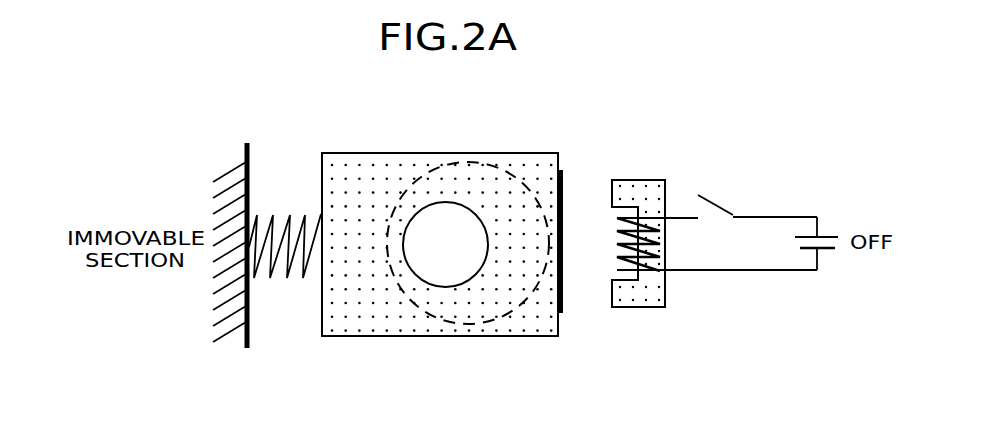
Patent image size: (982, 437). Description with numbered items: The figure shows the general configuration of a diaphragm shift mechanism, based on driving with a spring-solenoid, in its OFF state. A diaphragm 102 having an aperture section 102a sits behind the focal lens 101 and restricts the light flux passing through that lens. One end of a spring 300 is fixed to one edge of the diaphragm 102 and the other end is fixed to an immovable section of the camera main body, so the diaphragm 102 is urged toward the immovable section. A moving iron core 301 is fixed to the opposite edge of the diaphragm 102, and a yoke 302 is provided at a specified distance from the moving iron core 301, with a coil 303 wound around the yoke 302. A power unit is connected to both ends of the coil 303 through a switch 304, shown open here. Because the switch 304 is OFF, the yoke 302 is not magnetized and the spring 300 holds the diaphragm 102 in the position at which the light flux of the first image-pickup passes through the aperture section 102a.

The focal lens 101 is at (484, 320).
The diaphragm 102 is at (518, 163).
The aperture section 102a is at (428, 283).
The spring 300 is at (273, 214).
The moving iron core 301 is at (562, 312).
The yoke 302 is at (625, 180).
The coil 303 is at (647, 267).
The switch 304 is at (725, 203).